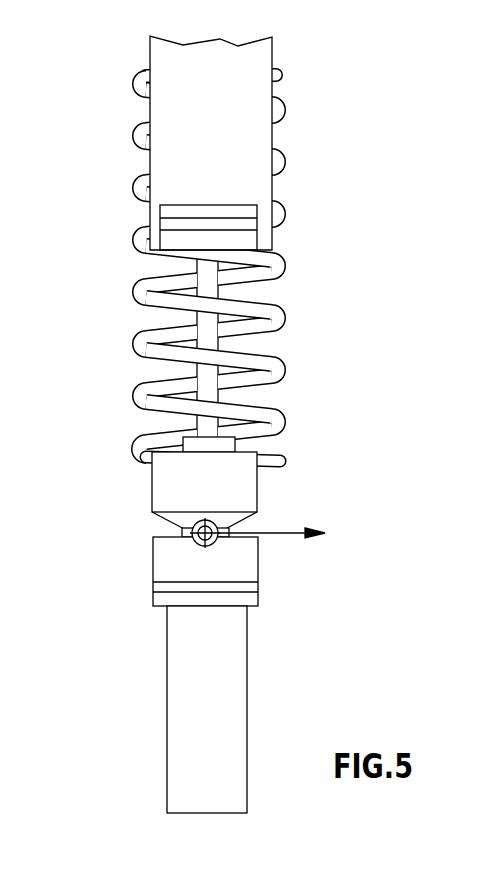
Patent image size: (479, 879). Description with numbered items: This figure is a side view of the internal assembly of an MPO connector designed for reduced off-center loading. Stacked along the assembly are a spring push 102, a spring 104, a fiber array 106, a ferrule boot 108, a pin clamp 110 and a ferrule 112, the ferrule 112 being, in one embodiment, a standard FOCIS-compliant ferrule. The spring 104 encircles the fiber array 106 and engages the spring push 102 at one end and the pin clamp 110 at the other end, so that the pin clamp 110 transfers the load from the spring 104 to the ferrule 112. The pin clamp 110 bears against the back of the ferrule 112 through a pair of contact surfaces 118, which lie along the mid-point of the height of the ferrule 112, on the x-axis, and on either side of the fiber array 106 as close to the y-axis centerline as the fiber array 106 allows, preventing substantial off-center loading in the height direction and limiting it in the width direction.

The spring push 102 is at (237, 133).
The spring 104 is at (275, 265).
The fiber array 106 is at (213, 340).
The ferrule boot 108 is at (232, 441).
The pin clamp 110 is at (168, 482).
The ferrule 112 is at (223, 683).
The contact surfaces 118 is at (212, 535).